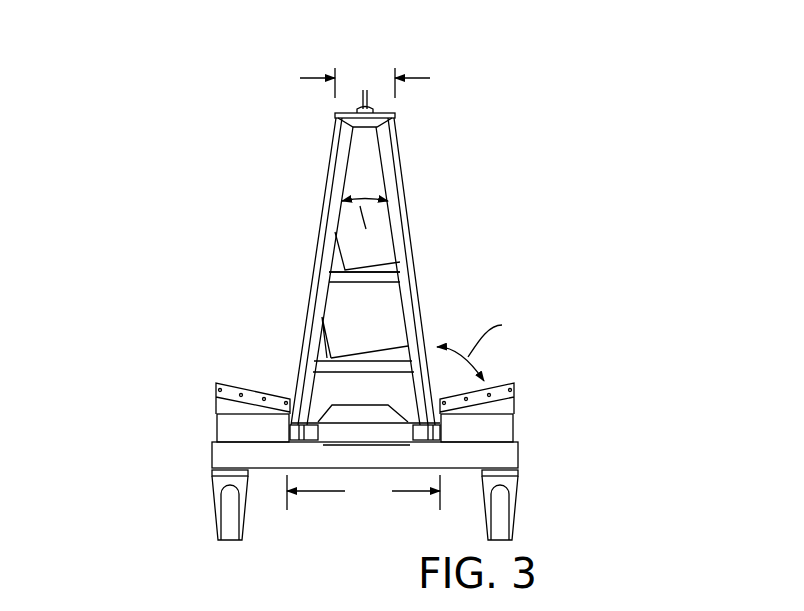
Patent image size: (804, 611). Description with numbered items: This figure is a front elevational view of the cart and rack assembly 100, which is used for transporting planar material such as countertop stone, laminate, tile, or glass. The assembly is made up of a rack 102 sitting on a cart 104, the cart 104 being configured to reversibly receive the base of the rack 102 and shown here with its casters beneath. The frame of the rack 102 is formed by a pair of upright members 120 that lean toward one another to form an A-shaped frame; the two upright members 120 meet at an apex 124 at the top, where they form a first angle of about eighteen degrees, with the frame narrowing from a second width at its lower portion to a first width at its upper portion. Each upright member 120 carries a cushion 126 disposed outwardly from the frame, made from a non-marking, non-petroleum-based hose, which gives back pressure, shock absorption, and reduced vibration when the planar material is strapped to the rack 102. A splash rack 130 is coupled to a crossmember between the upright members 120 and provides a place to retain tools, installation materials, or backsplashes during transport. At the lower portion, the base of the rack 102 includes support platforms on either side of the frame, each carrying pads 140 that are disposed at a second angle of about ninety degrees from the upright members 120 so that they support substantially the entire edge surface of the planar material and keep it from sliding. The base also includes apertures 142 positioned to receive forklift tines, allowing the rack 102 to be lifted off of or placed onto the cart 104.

The cart and rack assembly 100 is at (156, 64).
The rack 102 is at (308, 263).
The cart 104 is at (209, 457).
The upright members 120 is at (330, 185).
The apex 124 is at (350, 110).
The cushion 126 is at (416, 262).
The splash rack 130 is at (324, 347).
The pads 140 is at (500, 384).
The apertures 142 is at (236, 432).